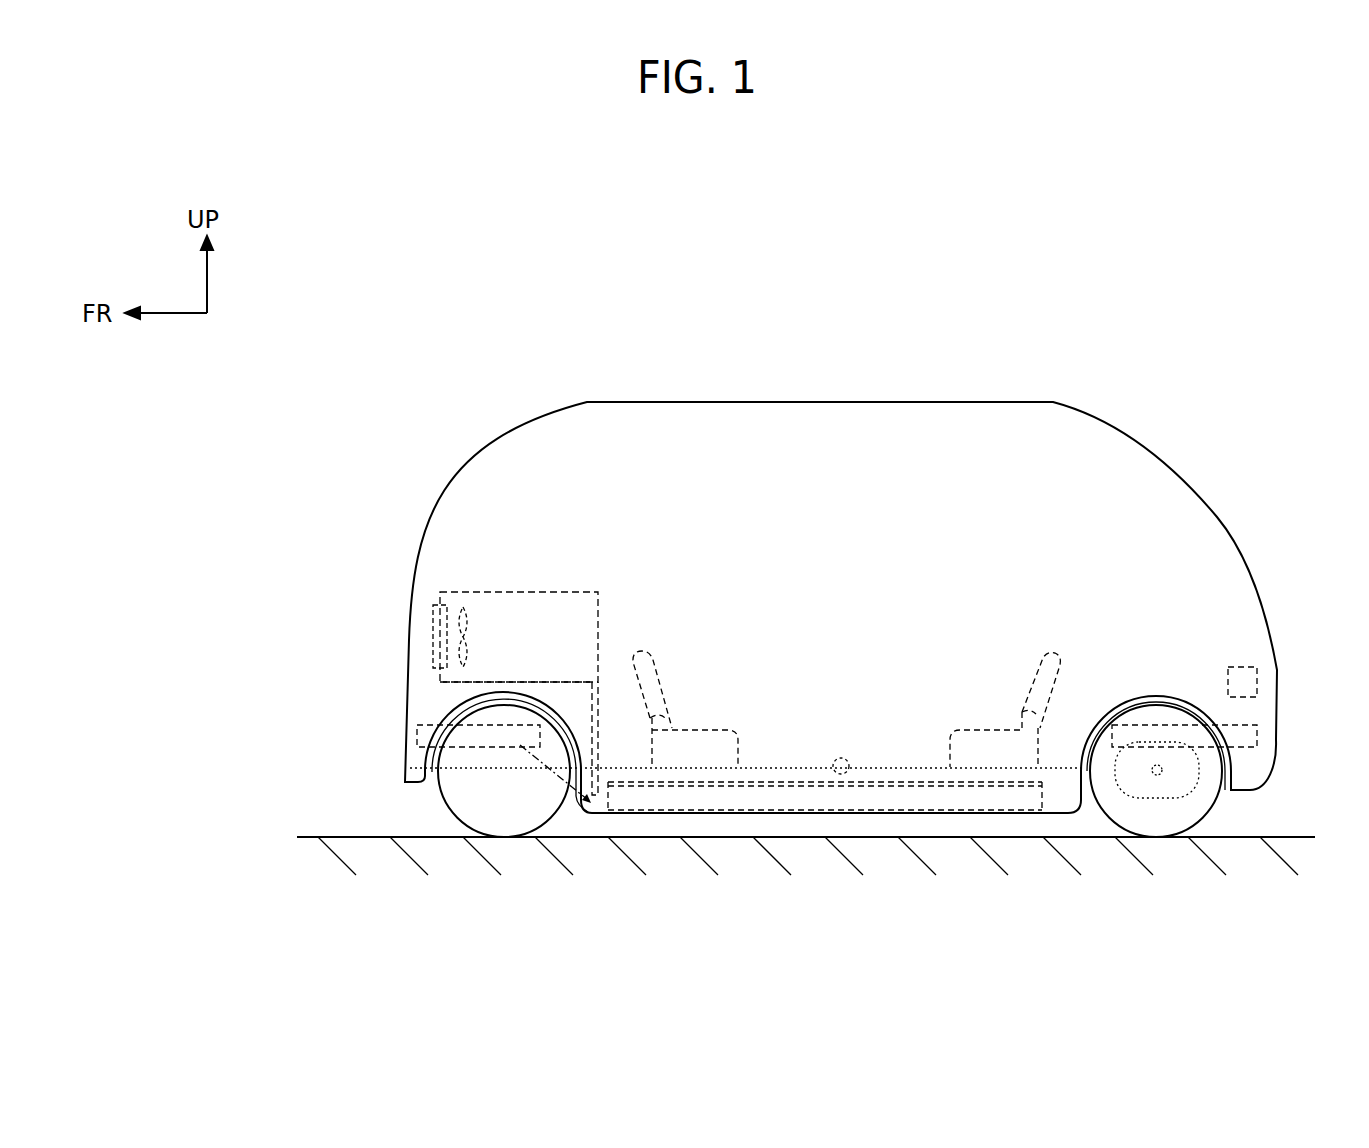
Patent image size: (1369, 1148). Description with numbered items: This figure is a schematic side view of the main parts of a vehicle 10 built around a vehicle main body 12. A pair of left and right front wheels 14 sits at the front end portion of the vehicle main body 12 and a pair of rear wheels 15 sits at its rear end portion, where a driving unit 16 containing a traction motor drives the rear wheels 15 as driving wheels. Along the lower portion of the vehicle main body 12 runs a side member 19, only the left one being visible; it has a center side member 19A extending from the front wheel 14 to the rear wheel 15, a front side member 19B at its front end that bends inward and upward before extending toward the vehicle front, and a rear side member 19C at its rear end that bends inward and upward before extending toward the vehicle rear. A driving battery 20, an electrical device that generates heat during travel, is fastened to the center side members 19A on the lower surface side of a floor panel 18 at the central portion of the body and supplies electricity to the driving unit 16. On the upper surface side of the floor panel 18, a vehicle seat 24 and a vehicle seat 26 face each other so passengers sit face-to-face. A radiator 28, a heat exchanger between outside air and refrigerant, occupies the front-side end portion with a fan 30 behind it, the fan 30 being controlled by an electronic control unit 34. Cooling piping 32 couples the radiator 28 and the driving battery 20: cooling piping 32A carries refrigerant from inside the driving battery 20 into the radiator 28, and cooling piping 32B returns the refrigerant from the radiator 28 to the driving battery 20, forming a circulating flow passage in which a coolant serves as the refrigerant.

The vehicle 10 is at (380, 270).
The vehicle main body 12 is at (1072, 400).
The front wheels 14 is at (452, 815).
The rear wheels 15 is at (1116, 836).
The driving unit 16 is at (1200, 773).
The floor panel 18 is at (840, 774).
The side member 19 is at (884, 772).
The center side member 19A is at (762, 782).
The front side member 19B is at (505, 727).
The rear side member 19C is at (1158, 725).
The driving battery 20 is at (1042, 784).
The vehicle seat 24 is at (710, 730).
The vehicle seat 26 is at (1040, 725).
The radiator 28 is at (433, 632).
The fan 30 is at (460, 595).
The cooling piping 32 is at (521, 585).
The cooling piping for heat radiation 32A is at (598, 607).
The cooling piping for cooling 32B is at (460, 692).
The electronic control unit (ECU) 34 is at (1243, 667).